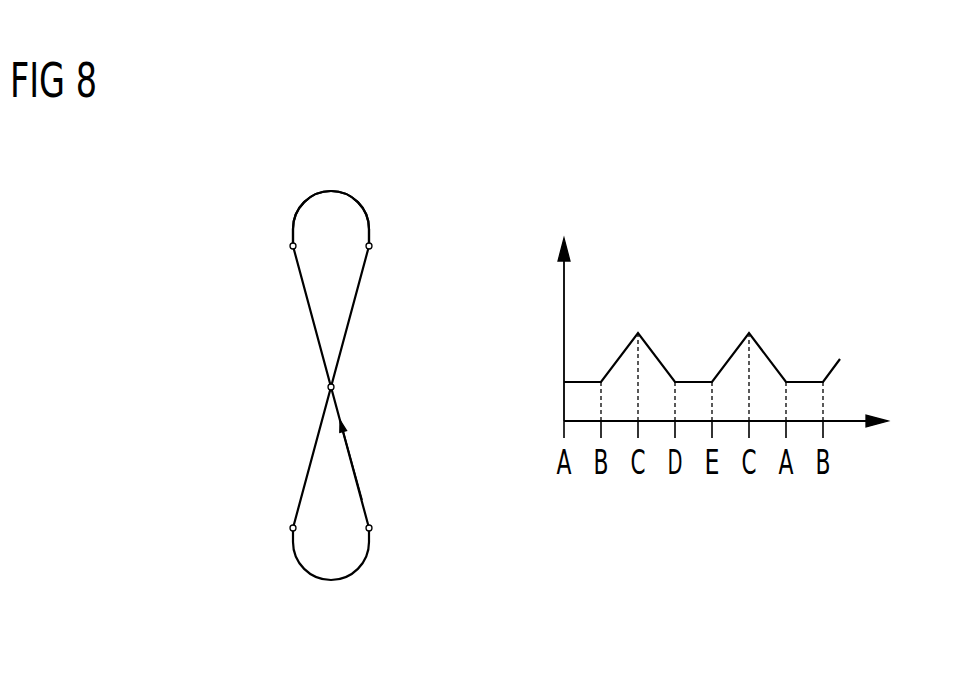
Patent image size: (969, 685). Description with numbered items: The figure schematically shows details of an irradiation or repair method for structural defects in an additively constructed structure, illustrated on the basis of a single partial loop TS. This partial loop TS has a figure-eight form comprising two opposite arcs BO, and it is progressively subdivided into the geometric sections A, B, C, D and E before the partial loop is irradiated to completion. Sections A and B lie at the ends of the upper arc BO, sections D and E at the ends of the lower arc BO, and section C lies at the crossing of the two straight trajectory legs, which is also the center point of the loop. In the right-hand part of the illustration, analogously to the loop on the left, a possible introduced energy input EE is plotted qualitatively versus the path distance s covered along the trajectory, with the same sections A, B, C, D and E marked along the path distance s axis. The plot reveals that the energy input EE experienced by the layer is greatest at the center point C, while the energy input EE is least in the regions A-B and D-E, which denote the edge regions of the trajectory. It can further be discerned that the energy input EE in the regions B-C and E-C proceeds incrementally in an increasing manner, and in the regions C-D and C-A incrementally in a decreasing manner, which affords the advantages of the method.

The partial loop TS is at (331, 191).
The arc BO is at (296, 212).
The geometric section A is at (293, 246).
The geometric section B is at (373, 246).
The geometric section C is at (331, 387).
The geometric section D is at (293, 528).
The geometric section E is at (373, 528).
The energy input EE is at (551, 329).
The path distance s is at (726, 434).